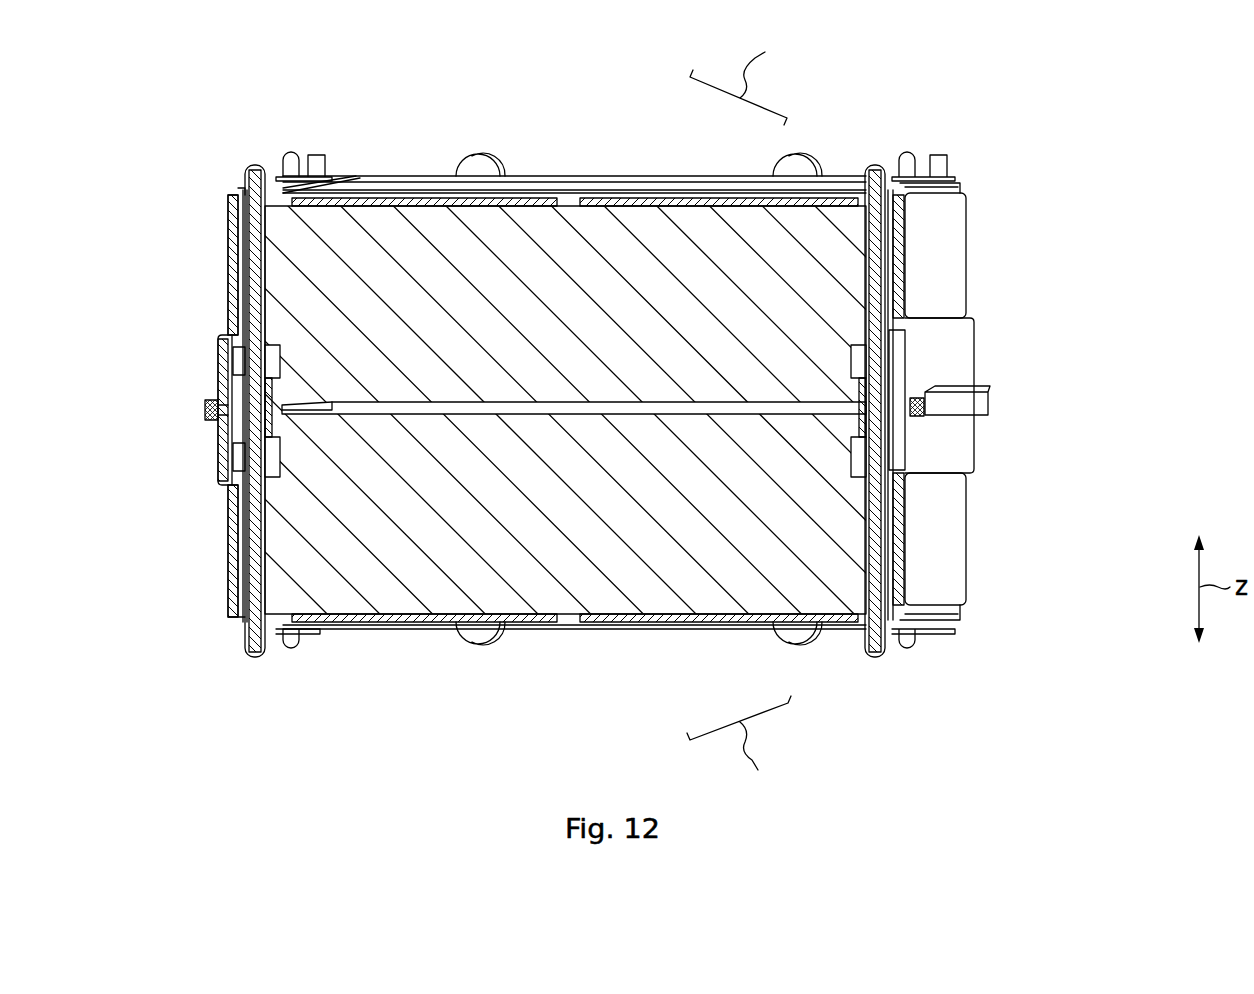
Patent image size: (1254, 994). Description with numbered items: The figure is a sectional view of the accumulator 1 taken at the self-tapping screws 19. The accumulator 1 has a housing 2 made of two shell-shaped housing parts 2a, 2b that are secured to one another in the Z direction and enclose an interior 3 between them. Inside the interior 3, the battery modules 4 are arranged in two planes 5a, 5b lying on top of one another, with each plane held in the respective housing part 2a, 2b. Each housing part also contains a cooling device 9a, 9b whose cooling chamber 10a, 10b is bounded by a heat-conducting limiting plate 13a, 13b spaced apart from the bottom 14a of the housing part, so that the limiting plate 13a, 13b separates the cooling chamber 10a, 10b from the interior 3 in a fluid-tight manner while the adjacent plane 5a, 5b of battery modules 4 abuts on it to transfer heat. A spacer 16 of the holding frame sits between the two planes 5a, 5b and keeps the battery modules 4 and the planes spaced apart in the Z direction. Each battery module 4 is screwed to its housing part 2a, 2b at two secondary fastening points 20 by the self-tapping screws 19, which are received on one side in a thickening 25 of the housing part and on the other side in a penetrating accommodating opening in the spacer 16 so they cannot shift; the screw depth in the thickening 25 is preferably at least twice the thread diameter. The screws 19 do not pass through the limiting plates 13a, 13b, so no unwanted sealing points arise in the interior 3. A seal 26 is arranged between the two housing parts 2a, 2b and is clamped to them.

The accumulator 1 is at (1065, 172).
The housing 2 is at (168, 405).
The housing part 2a is at (228, 275).
The housing part 2b is at (228, 552).
The interior 3 is at (528, 246).
The battery module 4 is at (929, 401).
The plane 5a is at (825, 283).
The plane 5b is at (825, 512).
The cooling device 9a is at (738, 74).
The cooling device 9b is at (739, 748).
The cooling chamber 10a is at (690, 190).
The cooling chamber 10b is at (675, 622).
The limiting plate 13a is at (715, 199).
The limiting plate 13b is at (712, 622).
The bottom 14a is at (620, 199).
The spacer 16 is at (228, 365).
The self-tapping screw 19 is at (250, 250).
The secondary fastening point 20 is at (257, 163).
The thickening 25 is at (252, 168).
The seal 26 is at (212, 408).